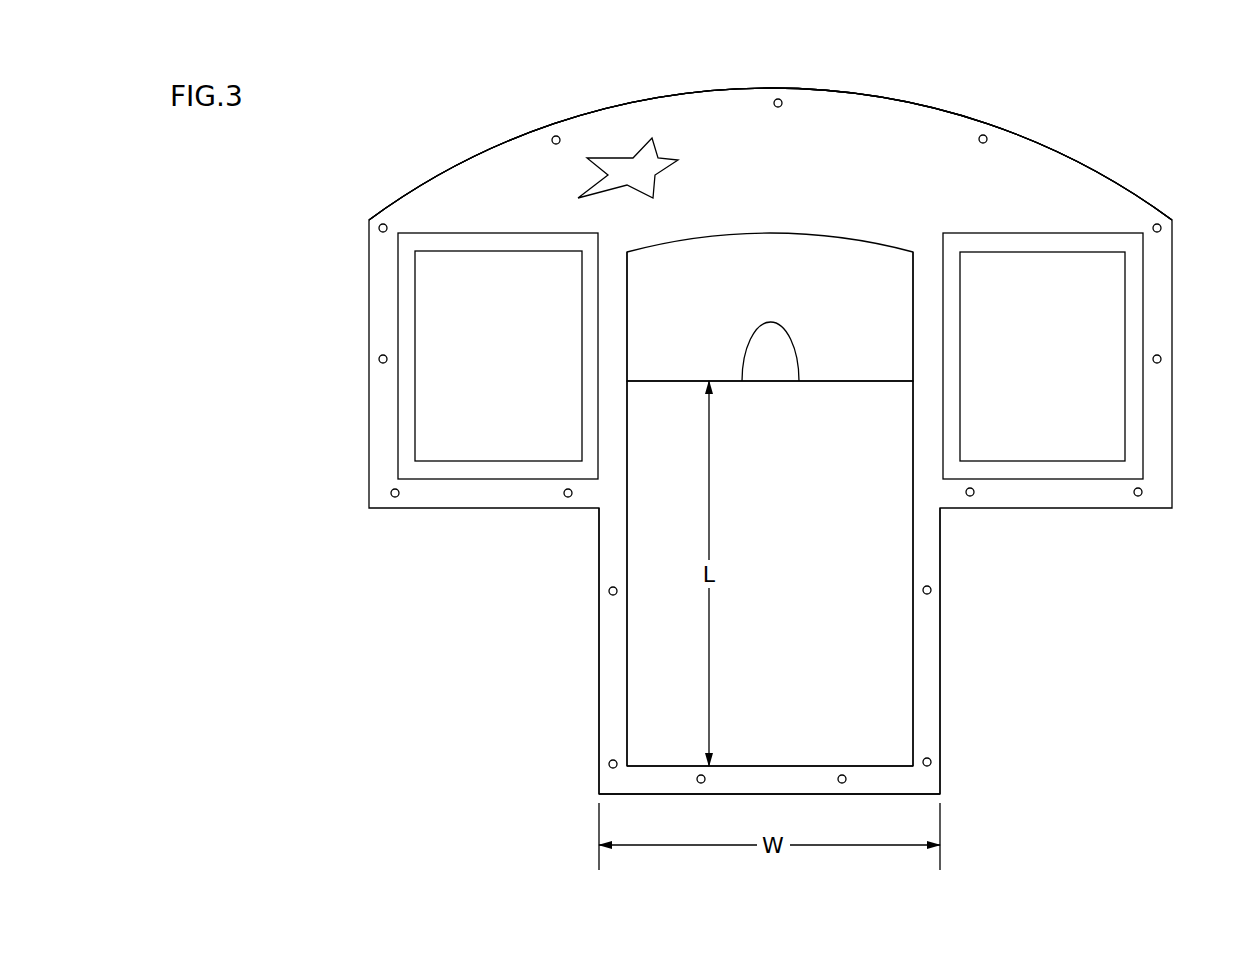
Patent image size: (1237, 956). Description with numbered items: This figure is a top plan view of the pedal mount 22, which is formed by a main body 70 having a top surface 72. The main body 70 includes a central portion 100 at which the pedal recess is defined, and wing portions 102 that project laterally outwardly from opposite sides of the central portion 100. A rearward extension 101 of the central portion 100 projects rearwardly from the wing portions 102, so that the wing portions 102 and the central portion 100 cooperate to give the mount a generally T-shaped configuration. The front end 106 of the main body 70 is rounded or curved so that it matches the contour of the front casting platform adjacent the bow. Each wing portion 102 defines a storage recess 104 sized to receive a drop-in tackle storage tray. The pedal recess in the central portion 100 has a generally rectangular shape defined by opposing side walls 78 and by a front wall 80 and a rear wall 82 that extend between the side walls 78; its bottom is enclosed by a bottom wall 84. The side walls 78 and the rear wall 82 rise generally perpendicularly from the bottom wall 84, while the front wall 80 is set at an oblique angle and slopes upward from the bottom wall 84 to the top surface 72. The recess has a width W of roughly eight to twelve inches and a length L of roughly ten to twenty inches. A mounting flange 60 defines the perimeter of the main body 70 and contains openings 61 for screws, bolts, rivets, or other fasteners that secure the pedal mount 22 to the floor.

The pedal mount 22 is at (1133, 155).
The main body 70 is at (827, 88).
The top surface 72 is at (873, 115).
The front end 106 is at (657, 98).
The openings 61 is at (553, 135).
The wing portions 102 is at (369, 443).
The storage recess 104 is at (407, 338).
The front wall 80 is at (713, 283).
The bottom wall 84 is at (773, 564).
The side walls 78 is at (627, 518).
The rear wall 82 is at (772, 766).
The central portion 100 is at (792, 794).
The rearward extension 101 is at (599, 682).
The mounting flange 60 is at (940, 794).